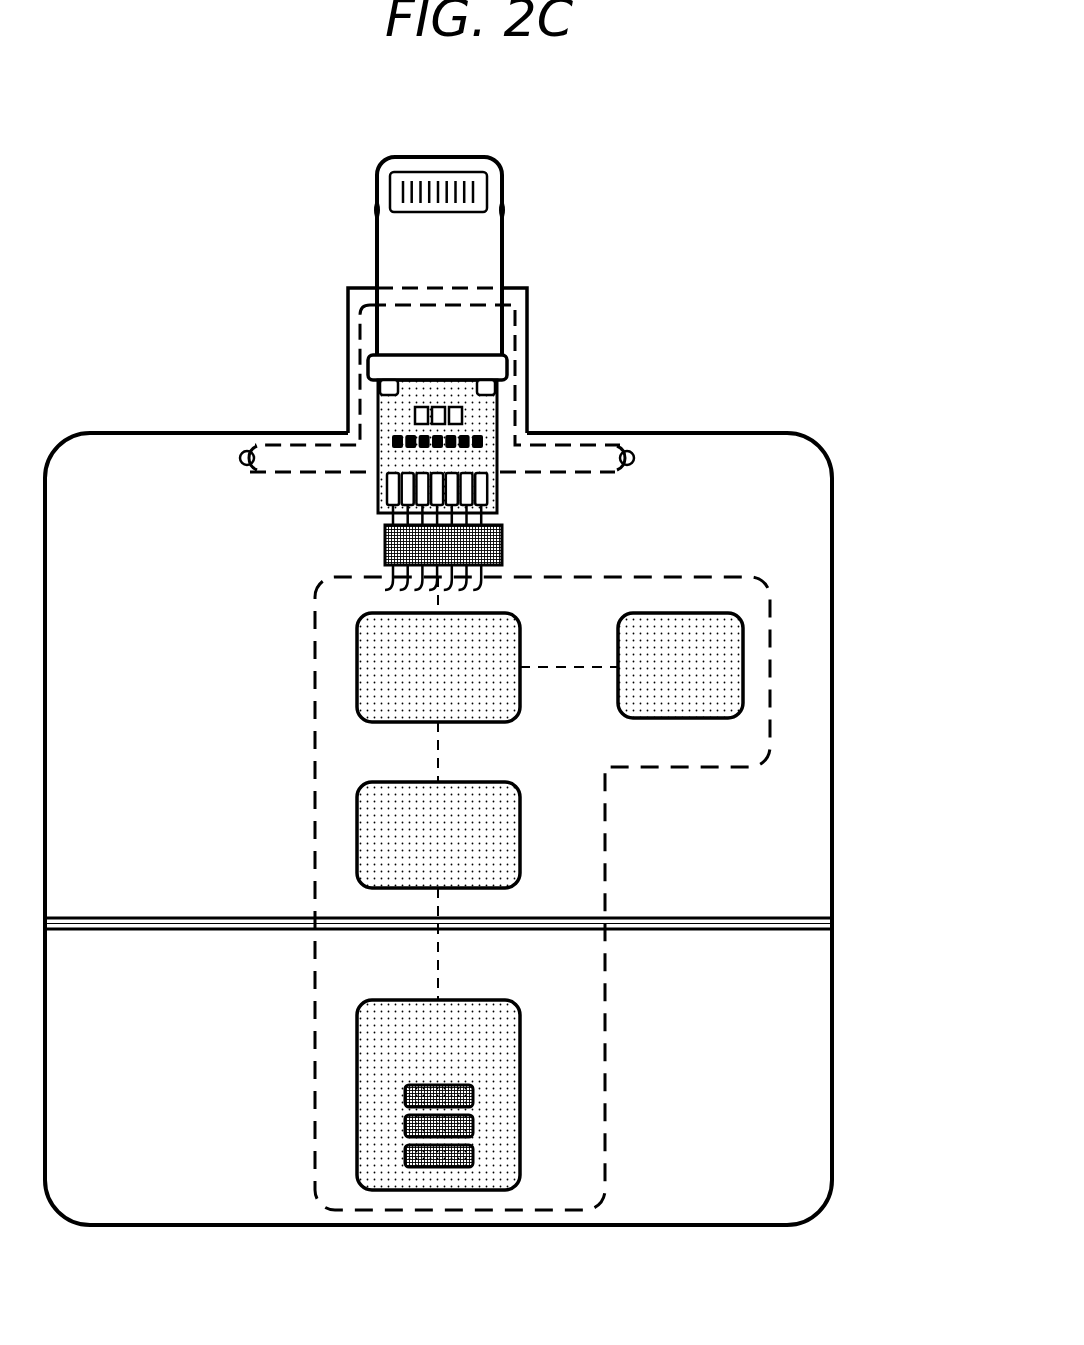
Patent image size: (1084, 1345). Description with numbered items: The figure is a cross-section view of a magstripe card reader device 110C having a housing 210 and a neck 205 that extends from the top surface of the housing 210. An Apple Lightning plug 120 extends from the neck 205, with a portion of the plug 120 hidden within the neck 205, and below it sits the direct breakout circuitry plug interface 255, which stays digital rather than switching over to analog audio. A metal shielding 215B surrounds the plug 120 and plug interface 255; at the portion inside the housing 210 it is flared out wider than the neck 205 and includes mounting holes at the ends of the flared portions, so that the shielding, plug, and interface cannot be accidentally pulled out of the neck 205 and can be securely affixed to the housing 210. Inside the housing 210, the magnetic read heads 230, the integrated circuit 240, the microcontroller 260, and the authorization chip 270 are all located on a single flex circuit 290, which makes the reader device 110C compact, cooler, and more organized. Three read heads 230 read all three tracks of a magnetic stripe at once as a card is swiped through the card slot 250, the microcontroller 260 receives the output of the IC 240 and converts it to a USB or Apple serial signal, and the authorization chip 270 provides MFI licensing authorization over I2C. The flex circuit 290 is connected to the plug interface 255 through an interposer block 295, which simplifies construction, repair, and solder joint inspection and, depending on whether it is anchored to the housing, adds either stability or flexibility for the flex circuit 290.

The reader device 110C is at (845, 1222).
The Apple Lightning plug 120 is at (321, 275).
The neck 205 is at (570, 290).
The housing 210 is at (874, 1222).
The metal shielding 215B is at (233, 458).
The magnetic read heads 230 is at (438, 1095).
The integrated circuit 240 is at (438, 835).
The card slot 250 is at (438, 1007).
The direct breakout circuitry plug interface 255 is at (500, 516).
The microcontroller 260 is at (438, 667).
The authorization chip 270 is at (680, 665).
The flex circuit 290 is at (347, 973).
The interposer block 295 is at (385, 545).